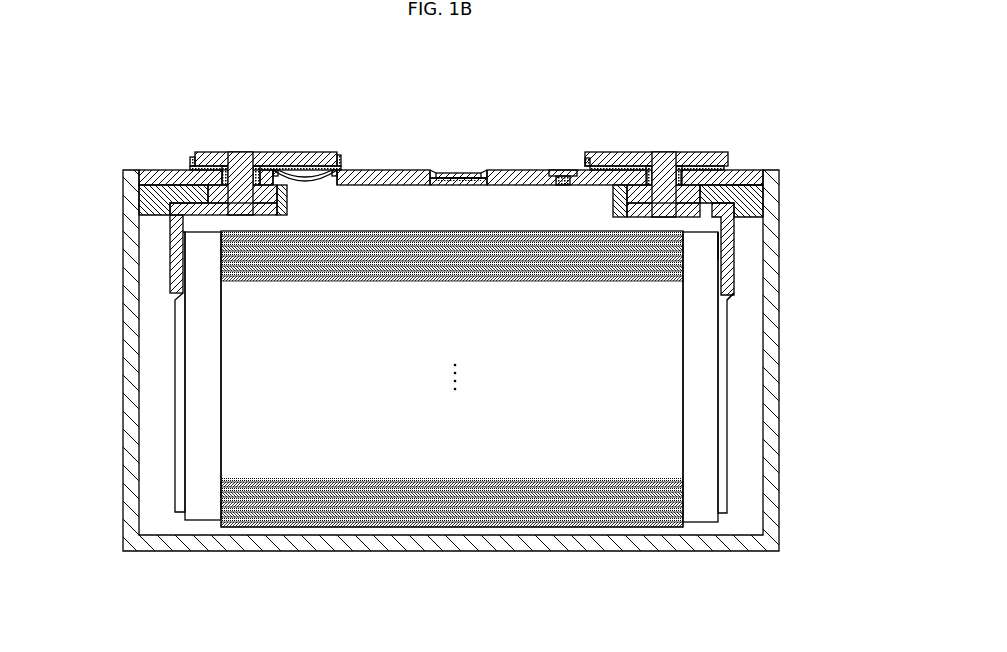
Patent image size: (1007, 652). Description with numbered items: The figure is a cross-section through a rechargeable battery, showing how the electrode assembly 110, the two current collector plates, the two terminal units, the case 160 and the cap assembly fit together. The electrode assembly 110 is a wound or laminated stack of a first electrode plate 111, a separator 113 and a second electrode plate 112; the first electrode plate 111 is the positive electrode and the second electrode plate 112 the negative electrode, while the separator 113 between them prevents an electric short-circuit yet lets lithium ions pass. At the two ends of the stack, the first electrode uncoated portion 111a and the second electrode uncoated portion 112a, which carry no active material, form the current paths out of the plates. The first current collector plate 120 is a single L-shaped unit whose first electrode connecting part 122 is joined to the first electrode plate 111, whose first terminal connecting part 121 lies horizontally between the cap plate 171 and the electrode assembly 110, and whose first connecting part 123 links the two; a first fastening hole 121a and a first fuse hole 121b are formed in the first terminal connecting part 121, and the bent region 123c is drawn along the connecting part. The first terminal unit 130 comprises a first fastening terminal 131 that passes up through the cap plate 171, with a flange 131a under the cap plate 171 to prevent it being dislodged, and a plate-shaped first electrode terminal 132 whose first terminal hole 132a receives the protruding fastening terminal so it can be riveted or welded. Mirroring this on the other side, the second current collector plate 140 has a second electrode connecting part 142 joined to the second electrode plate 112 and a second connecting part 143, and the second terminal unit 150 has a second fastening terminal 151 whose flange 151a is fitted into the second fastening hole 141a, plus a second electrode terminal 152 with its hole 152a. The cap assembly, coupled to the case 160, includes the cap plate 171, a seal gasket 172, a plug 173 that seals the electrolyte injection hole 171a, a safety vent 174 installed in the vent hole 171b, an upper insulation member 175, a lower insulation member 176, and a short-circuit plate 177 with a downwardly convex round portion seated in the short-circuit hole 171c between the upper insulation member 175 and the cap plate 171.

The electrode assembly 110 is at (450, 419).
The first electrode plate 111 is at (505, 528).
The first electrode uncoated portion 111a is at (700, 508).
The second electrode plate 112 is at (404, 528).
The second electrode uncoated portion 112a is at (200, 520).
The separator 113 is at (455, 528).
The first current collector plate 120 is at (744, 339).
The first terminal connecting part 121 is at (663, 219).
The first fastening hole 121a is at (683, 250).
The first fuse hole 121b is at (748, 178).
The first electrode connecting part 122 is at (727, 410).
The first connecting part 123 is at (712, 216).
The first collector bent part portion 123c is at (733, 272).
The first terminal unit 130 is at (645, 147).
The first fastening terminal 131 is at (671, 160).
The flange 131a is at (627, 198).
The first electrode terminal 132 is at (713, 152).
The first terminal hole 132a is at (660, 152).
The second current collector plate 140 is at (161, 357).
The second fastening hole 141a is at (230, 221).
The second electrode connecting part 142 is at (178, 410).
The second connecting part 143 is at (176, 270).
The second terminal unit 150 is at (476, 149).
The second fastening terminal 151 is at (247, 159).
The flange 151a is at (290, 204).
The second electrode terminal 152 is at (295, 152).
The second terminal gasket 152a is at (233, 152).
The case 160 is at (330, 528).
The cap plate 171 is at (402, 177).
The electrolyte injection hole 171a is at (565, 185).
The vent hole 171b is at (439, 178).
The short-circuit hole 171c is at (322, 184).
The seal gasket 172 is at (208, 152).
The plug 173 is at (564, 170).
The safety vent 174 is at (475, 172).
The upper insulation member 175 is at (340, 157).
The lower insulation member 176 is at (140, 198).
The short-circuit plate 177 is at (313, 176).